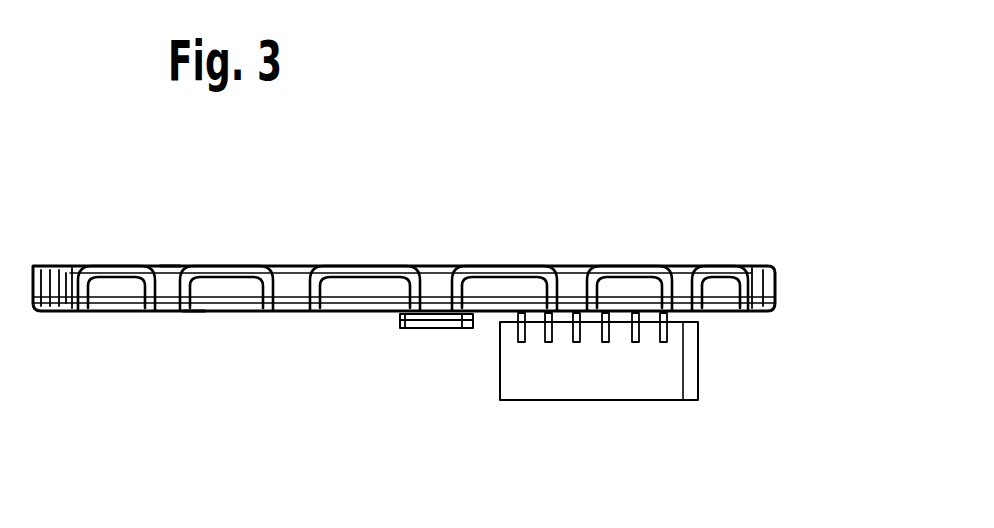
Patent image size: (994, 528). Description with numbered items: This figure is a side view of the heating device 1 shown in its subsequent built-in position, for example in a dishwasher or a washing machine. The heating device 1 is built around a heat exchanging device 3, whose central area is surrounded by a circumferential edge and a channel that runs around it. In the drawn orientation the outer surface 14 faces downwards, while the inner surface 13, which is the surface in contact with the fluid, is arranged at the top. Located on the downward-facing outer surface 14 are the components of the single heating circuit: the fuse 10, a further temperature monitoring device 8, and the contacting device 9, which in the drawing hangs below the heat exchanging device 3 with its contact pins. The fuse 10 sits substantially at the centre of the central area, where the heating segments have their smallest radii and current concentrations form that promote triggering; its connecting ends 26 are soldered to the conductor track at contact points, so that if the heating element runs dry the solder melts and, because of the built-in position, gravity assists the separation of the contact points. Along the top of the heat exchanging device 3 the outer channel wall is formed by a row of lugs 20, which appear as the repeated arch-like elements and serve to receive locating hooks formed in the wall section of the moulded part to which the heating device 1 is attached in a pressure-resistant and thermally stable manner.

The heating device 1 is at (745, 153).
The heat exchanging device 3 is at (433, 262).
The temperature monitoring device 8 is at (650, 330).
The contacting device 9 is at (563, 377).
The fuse 10 is at (437, 322).
The inner surface 13 is at (180, 256).
The outer surface 14 is at (193, 313).
The lugs 20 is at (330, 263).
The connecting ends 26 is at (398, 320).